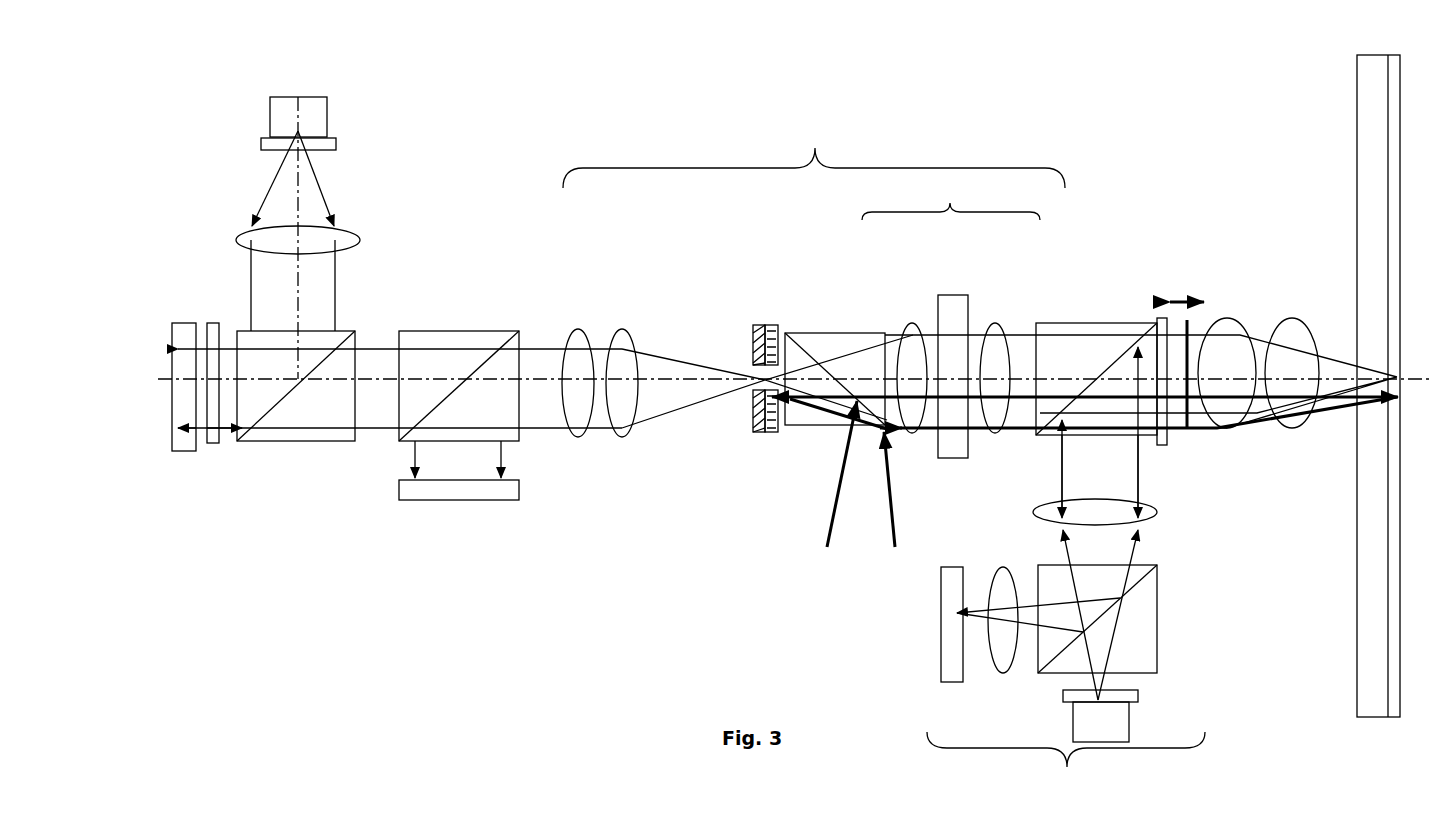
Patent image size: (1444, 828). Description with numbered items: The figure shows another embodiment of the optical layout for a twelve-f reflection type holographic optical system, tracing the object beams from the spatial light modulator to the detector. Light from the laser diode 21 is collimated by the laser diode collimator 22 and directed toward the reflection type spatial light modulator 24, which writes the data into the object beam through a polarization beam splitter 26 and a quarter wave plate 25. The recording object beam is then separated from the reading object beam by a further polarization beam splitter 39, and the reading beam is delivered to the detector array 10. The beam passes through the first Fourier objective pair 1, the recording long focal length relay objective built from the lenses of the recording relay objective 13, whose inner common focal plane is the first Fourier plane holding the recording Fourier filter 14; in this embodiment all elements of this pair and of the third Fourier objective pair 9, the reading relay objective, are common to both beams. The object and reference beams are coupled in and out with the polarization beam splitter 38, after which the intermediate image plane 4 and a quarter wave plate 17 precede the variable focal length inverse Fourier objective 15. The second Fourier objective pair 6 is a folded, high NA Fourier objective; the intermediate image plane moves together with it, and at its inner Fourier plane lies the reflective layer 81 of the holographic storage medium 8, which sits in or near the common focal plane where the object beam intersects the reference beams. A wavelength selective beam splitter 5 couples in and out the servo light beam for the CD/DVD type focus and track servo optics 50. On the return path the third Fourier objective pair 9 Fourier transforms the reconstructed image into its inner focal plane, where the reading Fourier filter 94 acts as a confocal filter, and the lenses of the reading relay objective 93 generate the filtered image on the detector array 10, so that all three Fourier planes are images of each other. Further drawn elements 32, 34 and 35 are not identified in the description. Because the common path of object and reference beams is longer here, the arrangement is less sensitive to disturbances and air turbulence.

The first Fourier objective pair 1 is at (980, 257).
The third Fourier objective pair 9 is at (980, 257).
The intermediate image plane 4 is at (1190, 284).
The wavelength selective beam splitter 5 is at (1085, 392).
The second Fourier objective pair 6 is at (1298, 322).
The holographic storage medium 8 is at (1373, 689).
The reflective layer 81 is at (1385, 113).
The detector array 10 is at (478, 489).
The lenses of the recording relay objective 13 is at (600, 352).
The lenses of the reading relay objective 93 is at (607, 328).
The recording Fourier filter 14 is at (705, 402).
The reading Fourier filter 94 is at (752, 405).
The variable focal length inverse Fourier objective 15 is at (951, 307).
The quarter wave plate 17 is at (955, 298).
The laser diode 21 is at (305, 238).
The laser diode collimator 22 is at (232, 236).
The reflection type spatial light modulator 24 is at (178, 404).
The quarter wave plate 25 is at (218, 442).
The polarization beam splitter 26 is at (321, 417).
The reflected beam 32 is at (1093, 472).
The aperture plate 34 is at (770, 423).
The beam splitter cube 35 is at (1017, 425).
The polarization beam splitter 38 is at (810, 410).
The further polarization beam splitter 39 is at (417, 392).
The focus and track servo optics 50 is at (1066, 617).